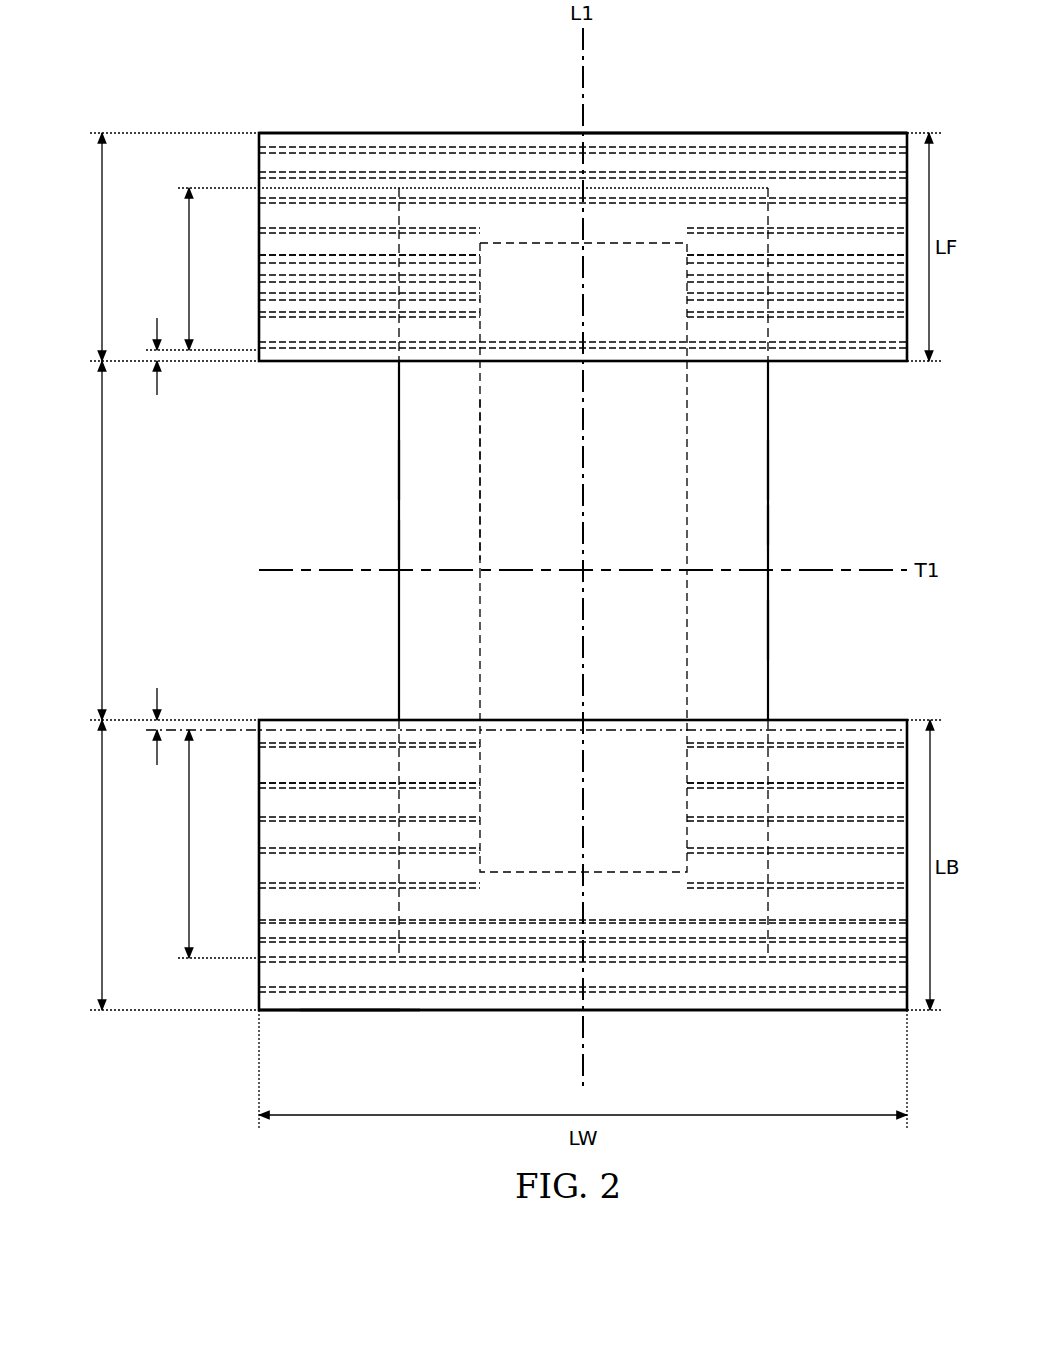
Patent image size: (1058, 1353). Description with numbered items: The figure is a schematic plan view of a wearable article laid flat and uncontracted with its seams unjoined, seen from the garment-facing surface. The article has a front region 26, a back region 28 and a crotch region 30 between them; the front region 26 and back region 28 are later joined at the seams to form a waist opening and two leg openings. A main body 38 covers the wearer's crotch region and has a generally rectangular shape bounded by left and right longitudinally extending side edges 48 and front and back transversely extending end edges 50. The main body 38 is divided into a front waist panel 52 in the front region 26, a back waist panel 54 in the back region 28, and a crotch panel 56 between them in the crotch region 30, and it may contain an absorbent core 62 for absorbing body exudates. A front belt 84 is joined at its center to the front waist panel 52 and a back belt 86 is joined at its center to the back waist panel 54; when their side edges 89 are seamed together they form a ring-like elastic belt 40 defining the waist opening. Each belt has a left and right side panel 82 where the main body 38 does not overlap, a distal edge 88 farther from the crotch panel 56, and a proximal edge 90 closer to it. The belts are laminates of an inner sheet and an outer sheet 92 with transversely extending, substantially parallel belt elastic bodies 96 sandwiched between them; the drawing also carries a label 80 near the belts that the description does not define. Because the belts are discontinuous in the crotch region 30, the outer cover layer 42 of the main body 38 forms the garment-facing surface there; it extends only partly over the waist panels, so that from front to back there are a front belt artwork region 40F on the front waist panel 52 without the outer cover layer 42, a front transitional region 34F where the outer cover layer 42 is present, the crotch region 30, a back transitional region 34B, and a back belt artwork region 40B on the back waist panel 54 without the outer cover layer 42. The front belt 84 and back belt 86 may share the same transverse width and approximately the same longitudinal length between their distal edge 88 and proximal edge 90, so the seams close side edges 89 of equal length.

The front region 26 is at (102, 247).
The back region 28 is at (102, 865).
The crotch region 30 is at (102, 540).
The front transitional region 34F is at (160, 388).
The back transitional region 34B is at (160, 697).
The main body 38 is at (772, 525).
The ring-like elastic belt 40 is at (722, 63).
The front belt artwork region 40F is at (189, 273).
The back belt artwork region 40B is at (189, 848).
The outer cover layer 42 is at (765, 625).
The side edges 48 is at (399, 470).
The end edges 50 is at (485, 180).
The front waist panel 52 is at (545, 318).
The back waist panel 54 is at (547, 815).
The crotch panel 56 is at (397, 540).
The absorbent core 62 is at (480, 495).
The inner belt layer 80 is at (550, 165).
The side panels 82 is at (322, 322).
The front belt 84 is at (845, 133).
The back belt 86 is at (298, 1010).
The distal edge 88 is at (618, 133).
The side edges 89 is at (265, 222).
The proximal edge 90 is at (375, 361).
The outer sheet 92 is at (297, 135).
The belt elastic bodies 96 is at (265, 158).